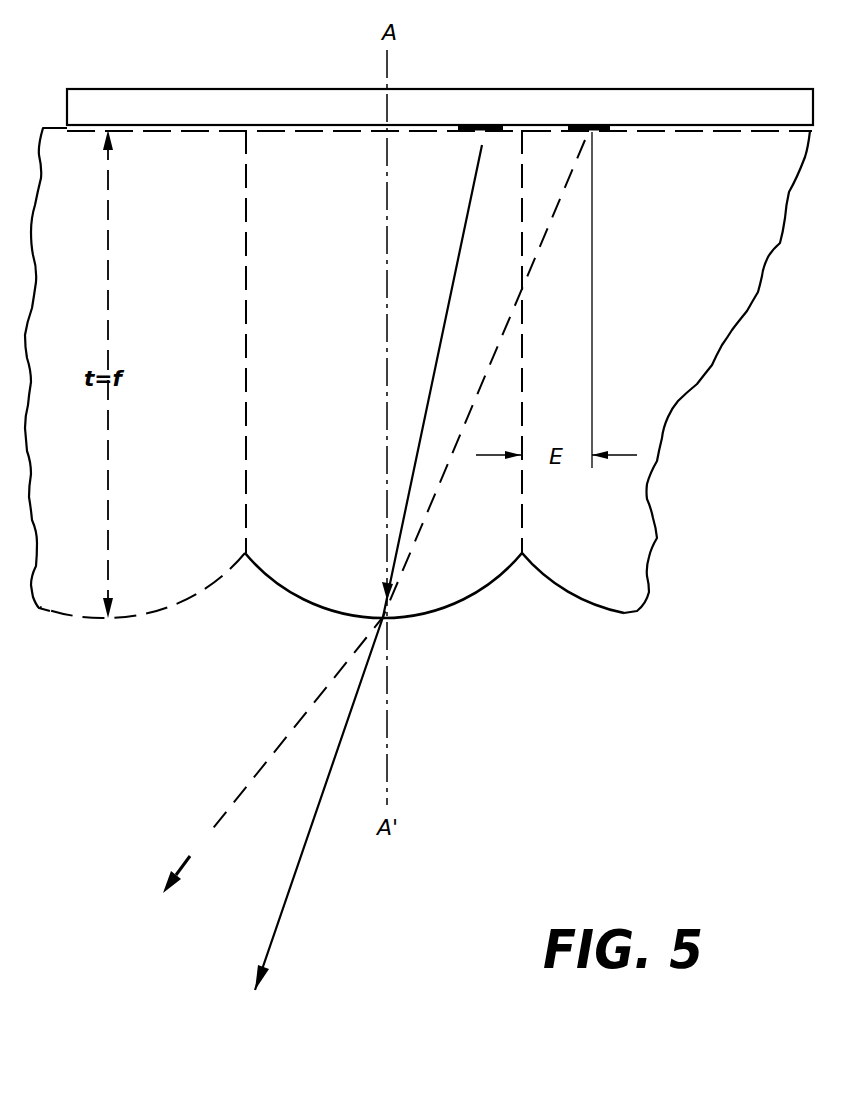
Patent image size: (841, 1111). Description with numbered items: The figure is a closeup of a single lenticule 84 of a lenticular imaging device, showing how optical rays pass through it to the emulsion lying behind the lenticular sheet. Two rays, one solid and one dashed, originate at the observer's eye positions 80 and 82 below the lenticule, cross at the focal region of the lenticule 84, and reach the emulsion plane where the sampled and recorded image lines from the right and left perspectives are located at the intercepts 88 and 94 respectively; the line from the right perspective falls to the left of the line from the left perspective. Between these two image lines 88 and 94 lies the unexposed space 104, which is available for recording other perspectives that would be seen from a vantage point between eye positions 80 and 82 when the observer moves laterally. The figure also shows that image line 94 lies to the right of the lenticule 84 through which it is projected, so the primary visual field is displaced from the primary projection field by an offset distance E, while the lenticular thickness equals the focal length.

The eye position 80 is at (272, 952).
The eye position 82 is at (210, 835).
The lenticule 84 is at (470, 598).
The image line (right perspective intercept) 88 is at (470, 126).
The image line (left perspective intercept) 94 is at (598, 128).
The unexposed space 104 is at (538, 130).